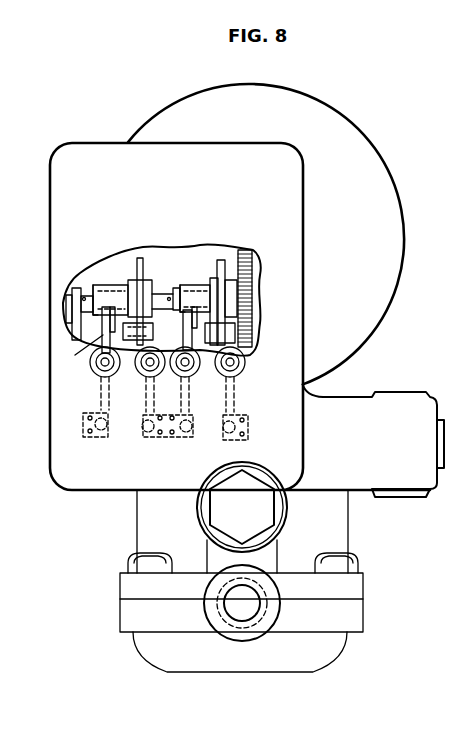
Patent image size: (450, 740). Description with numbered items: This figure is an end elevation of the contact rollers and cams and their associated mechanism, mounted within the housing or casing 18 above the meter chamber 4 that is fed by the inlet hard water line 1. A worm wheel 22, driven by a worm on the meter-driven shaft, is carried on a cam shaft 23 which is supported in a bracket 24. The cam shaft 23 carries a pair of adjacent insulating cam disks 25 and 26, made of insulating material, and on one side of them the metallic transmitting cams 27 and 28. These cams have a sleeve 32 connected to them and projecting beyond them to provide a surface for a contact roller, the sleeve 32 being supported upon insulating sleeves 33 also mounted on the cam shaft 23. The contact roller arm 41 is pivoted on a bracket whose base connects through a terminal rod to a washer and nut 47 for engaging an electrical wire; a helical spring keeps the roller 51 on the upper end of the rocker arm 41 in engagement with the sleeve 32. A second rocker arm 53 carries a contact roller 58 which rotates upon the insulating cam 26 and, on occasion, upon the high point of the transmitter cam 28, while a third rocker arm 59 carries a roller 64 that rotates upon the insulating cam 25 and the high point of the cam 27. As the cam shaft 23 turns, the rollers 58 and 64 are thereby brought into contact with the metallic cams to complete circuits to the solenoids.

The inlet hard water line 1 is at (253, 612).
The meter chamber 4 is at (330, 657).
The housing or casing 18 is at (297, 174).
The worm wheel 22 is at (250, 262).
The cam shaft 23 is at (68, 303).
The bracket 24 is at (70, 316).
The insulating cam disk 25 is at (221, 262).
The insulating cam disk 26 is at (145, 258).
The cam 27 is at (213, 278).
The cam 28 is at (130, 279).
The sleeve 32 is at (108, 283).
The insulating sleeves 33 is at (95, 292).
The contact roller arm 41 is at (103, 320).
The nut 47 is at (112, 373).
The roller 51 is at (132, 348).
The second rocker arm 53 is at (150, 332).
The contact roller 58 is at (160, 370).
The third rocker arm 59 is at (250, 333).
The roller 64 is at (246, 358).